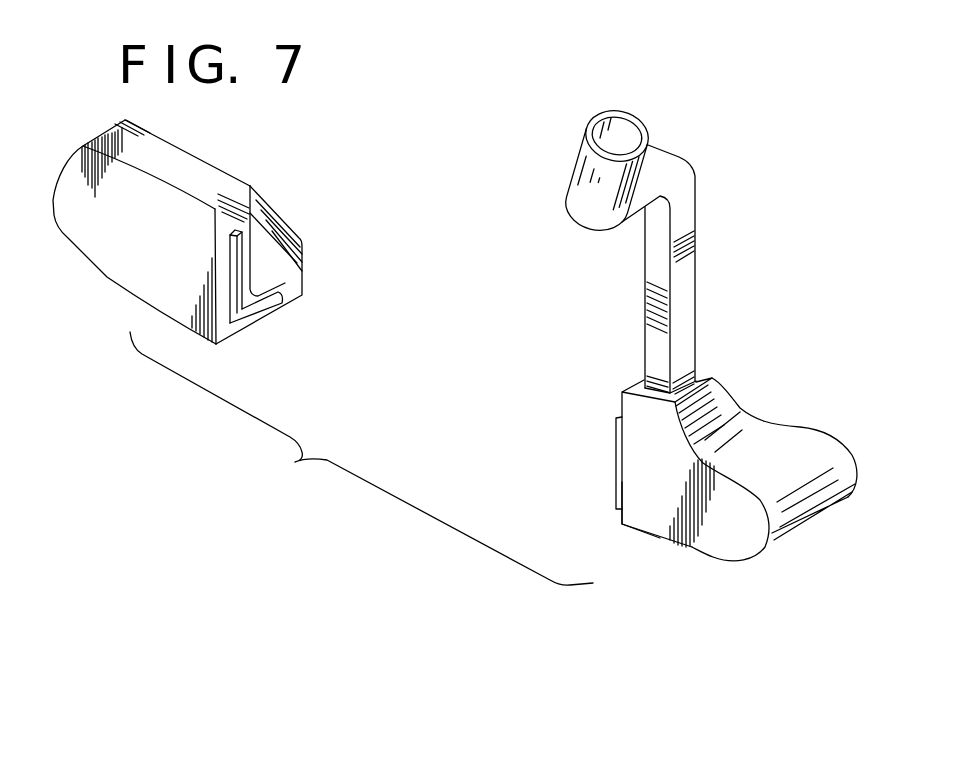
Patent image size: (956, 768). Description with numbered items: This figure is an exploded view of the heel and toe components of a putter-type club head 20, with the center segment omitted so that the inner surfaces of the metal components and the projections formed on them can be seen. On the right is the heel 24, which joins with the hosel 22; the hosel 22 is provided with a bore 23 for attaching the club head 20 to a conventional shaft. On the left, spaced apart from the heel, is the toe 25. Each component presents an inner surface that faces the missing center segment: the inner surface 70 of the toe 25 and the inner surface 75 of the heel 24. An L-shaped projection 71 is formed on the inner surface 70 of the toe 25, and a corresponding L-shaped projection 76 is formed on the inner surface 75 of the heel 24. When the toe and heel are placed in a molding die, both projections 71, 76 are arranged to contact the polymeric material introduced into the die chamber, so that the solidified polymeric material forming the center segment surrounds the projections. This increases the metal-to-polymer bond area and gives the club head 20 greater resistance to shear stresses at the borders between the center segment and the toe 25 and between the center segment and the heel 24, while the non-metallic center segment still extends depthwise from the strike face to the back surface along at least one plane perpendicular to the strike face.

The putter-type club head 20 is at (414, 132).
The hosel 22 is at (698, 283).
The bore 23 is at (627, 130).
The heel 24 is at (707, 542).
The toe 25 is at (140, 284).
The inner surface of the toe 70 is at (287, 297).
The L-shaped projection 71 is at (241, 315).
The inner surface of the heel 75 is at (620, 523).
The L-shaped projection 76 is at (615, 486).